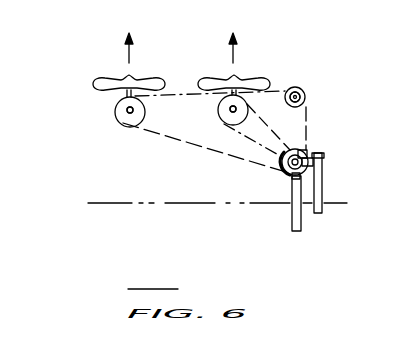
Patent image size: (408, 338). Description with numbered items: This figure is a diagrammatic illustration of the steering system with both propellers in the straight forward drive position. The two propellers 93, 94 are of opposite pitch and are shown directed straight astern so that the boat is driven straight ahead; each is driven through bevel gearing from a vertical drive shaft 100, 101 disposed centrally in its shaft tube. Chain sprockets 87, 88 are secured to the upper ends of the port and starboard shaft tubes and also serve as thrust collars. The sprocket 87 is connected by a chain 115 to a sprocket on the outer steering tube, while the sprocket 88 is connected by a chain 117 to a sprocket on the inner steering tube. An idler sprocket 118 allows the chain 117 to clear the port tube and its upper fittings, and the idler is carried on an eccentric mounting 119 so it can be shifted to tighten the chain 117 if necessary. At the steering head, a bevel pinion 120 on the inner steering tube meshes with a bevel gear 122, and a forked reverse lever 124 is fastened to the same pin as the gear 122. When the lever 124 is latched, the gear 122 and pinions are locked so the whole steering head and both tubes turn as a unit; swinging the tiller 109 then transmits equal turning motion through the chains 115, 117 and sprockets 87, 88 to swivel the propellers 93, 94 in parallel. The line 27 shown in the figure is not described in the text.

The axis line 27 is at (188, 204).
The chain sprocket 87 is at (238, 136).
The chain sprocket 88 is at (145, 113).
The propeller 93 is at (260, 79).
The propeller 94 is at (153, 79).
The vertical drive shaft 100 is at (228, 112).
The vertical drive shaft 101 is at (126, 112).
The steering handle or tiller 109 is at (293, 220).
The chain 115 is at (238, 135).
The chain 117 is at (243, 160).
The idler sprocket 118 is at (294, 107).
The eccentric mounting 119 is at (305, 92).
The bevel pinion 120 is at (287, 174).
The bevel gear 122 is at (306, 156).
The forked reverse lever 124 is at (320, 184).